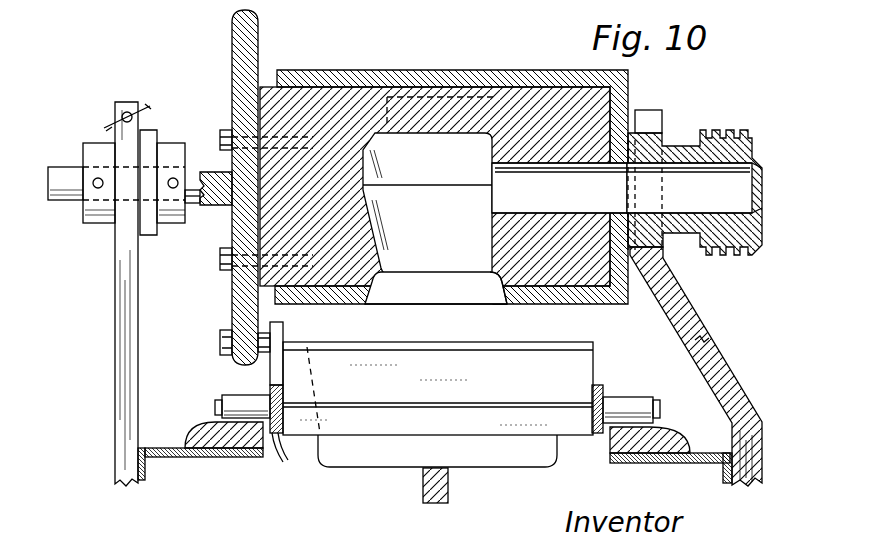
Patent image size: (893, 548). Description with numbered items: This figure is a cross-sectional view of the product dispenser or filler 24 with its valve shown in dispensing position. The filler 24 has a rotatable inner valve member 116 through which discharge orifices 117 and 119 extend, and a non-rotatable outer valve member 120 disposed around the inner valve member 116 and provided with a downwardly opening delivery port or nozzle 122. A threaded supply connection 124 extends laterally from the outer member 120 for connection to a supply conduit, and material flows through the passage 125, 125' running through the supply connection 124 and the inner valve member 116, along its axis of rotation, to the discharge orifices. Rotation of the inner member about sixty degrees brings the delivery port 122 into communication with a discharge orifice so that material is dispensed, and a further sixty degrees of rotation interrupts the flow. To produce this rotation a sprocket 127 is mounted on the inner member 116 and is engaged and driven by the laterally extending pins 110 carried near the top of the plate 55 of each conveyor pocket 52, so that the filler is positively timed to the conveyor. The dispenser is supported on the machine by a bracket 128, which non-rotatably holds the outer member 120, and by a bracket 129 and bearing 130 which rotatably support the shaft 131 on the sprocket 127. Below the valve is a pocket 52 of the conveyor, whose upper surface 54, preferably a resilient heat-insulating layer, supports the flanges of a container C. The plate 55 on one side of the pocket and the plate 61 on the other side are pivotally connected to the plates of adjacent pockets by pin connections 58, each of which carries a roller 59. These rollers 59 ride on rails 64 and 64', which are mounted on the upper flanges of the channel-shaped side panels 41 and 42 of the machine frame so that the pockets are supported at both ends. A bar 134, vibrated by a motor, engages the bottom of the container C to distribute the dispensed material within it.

The product dispenser 24 is at (682, 101).
The side panel 41 is at (725, 470).
The side panel 42 is at (146, 470).
The pocket 52 is at (580, 376).
The upper surface 54 is at (585, 345).
The plate 55 is at (282, 450).
The pin connection 58 is at (660, 405).
The roller 59 is at (650, 425).
The plate 61 is at (612, 390).
The rail 64 is at (650, 457).
The rail 64' is at (224, 465).
The pin 110 is at (222, 340).
The inner valve member 116 is at (325, 95).
The discharge orifice 117 is at (428, 150).
The discharge orifice 119 is at (468, 290).
The outer valve member 120 is at (540, 78).
The delivery port 122 is at (410, 294).
The threaded supply connection 124 is at (697, 236).
The passage 125 is at (694, 188).
The passage 125' is at (559, 188).
The sprocket 127 is at (232, 84).
The bracket 128 is at (733, 385).
The bracket 129 is at (112, 342).
The bearing 130 is at (95, 148).
The shaft 131 is at (196, 206).
The bar 134 is at (421, 488).
The container C is at (351, 460).